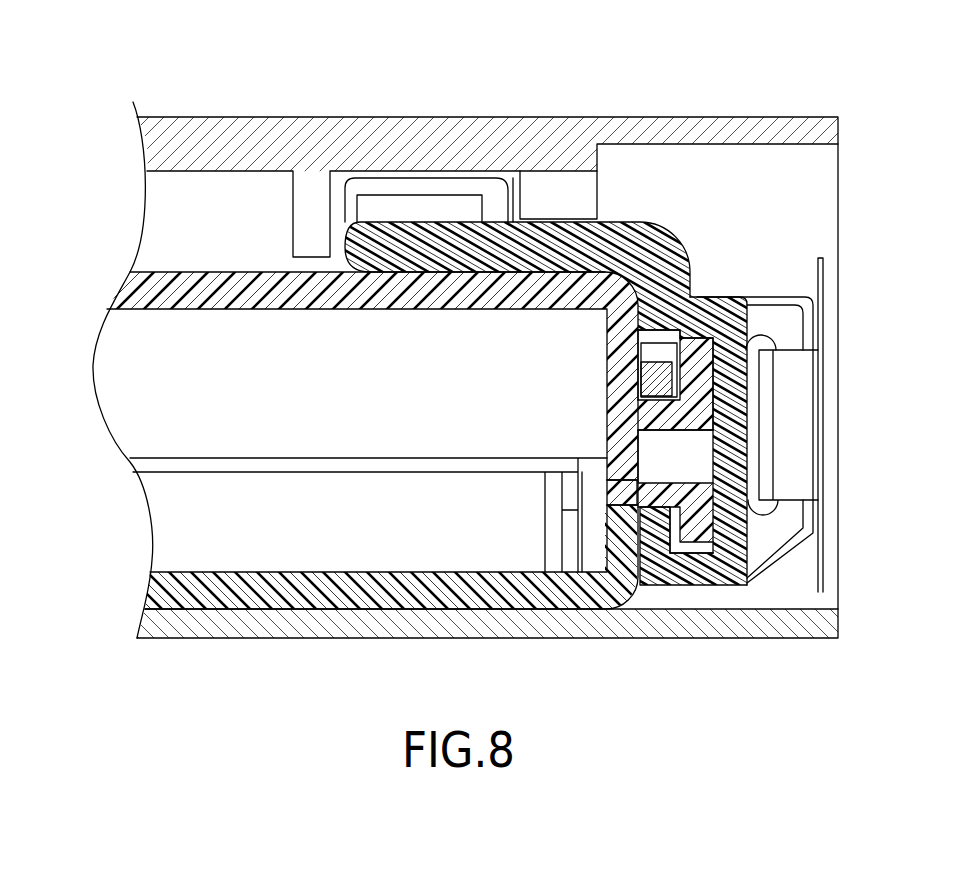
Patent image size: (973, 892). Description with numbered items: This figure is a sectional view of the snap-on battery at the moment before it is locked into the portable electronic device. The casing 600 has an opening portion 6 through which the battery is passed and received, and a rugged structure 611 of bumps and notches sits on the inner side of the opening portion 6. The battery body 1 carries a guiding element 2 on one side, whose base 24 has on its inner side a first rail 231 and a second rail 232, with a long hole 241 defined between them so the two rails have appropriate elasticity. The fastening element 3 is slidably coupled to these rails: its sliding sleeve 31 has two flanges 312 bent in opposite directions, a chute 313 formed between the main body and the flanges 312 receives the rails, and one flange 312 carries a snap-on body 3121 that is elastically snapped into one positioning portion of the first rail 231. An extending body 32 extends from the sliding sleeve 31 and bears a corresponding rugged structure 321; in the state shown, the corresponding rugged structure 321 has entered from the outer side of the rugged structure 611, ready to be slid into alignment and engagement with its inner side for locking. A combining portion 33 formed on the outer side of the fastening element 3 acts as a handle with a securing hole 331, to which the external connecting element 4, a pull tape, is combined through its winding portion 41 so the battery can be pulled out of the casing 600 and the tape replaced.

The casing 600 is at (512, 319).
The opening portion 6 is at (813, 172).
The rugged structure 611 is at (537, 187).
The battery body 1 is at (486, 376).
The guiding element 2 is at (692, 459).
The base 24 is at (698, 338).
The first rail 231 is at (663, 418).
The second rail 232 is at (610, 482).
The long hole 241 is at (700, 453).
The fastening element 3 is at (486, 383).
The sliding sleeve 31 is at (740, 482).
The extending body 32 is at (573, 240).
The corresponding rugged structure 321 is at (428, 205).
The flange 312 is at (633, 530).
The chute 313 is at (687, 552).
The snap-on body 3121 is at (647, 380).
The combining portion 33 is at (799, 392).
The securing hole 331 is at (767, 342).
The external connecting element 4 is at (828, 297).
The winding portion 41 is at (800, 383).